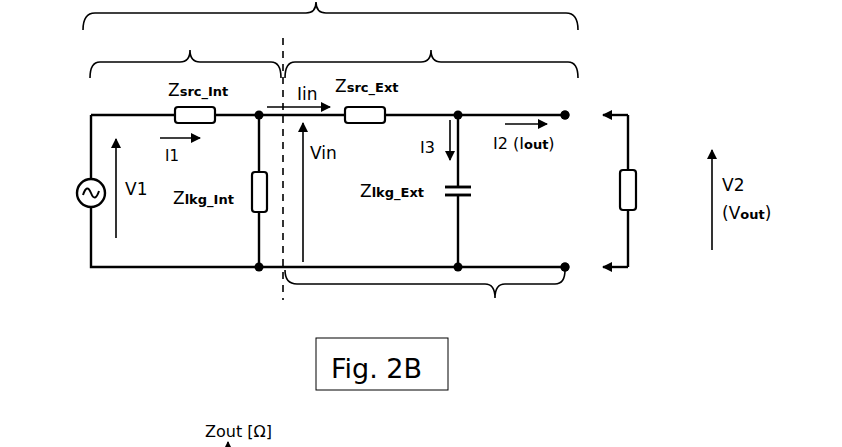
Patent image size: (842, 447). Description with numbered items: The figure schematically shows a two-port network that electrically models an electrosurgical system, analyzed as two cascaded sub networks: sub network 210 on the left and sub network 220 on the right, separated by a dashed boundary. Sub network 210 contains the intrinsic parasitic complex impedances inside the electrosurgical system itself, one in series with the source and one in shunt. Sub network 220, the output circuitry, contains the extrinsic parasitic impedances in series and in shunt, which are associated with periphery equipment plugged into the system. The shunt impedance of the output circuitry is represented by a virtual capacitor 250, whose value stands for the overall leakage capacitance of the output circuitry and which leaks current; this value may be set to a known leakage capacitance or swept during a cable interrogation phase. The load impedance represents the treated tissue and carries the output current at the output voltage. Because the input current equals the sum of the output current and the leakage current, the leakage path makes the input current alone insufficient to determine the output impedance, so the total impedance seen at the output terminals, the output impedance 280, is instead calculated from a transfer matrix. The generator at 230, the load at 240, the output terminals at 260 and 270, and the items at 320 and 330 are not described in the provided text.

The sub network 210 is at (185, 51).
The sub network 220 is at (431, 51).
The generator 230 is at (83, 181).
The load impedance 240 is at (636, 167).
The virtual capacitor 250 is at (471, 186).
The output node 260 is at (565, 110).
The return output node 270 is at (564, 262).
The output impedance 280 is at (397, 287).
The impedance curve 320 is at (409, 443).
The impedance curve 330 is at (615, 443).